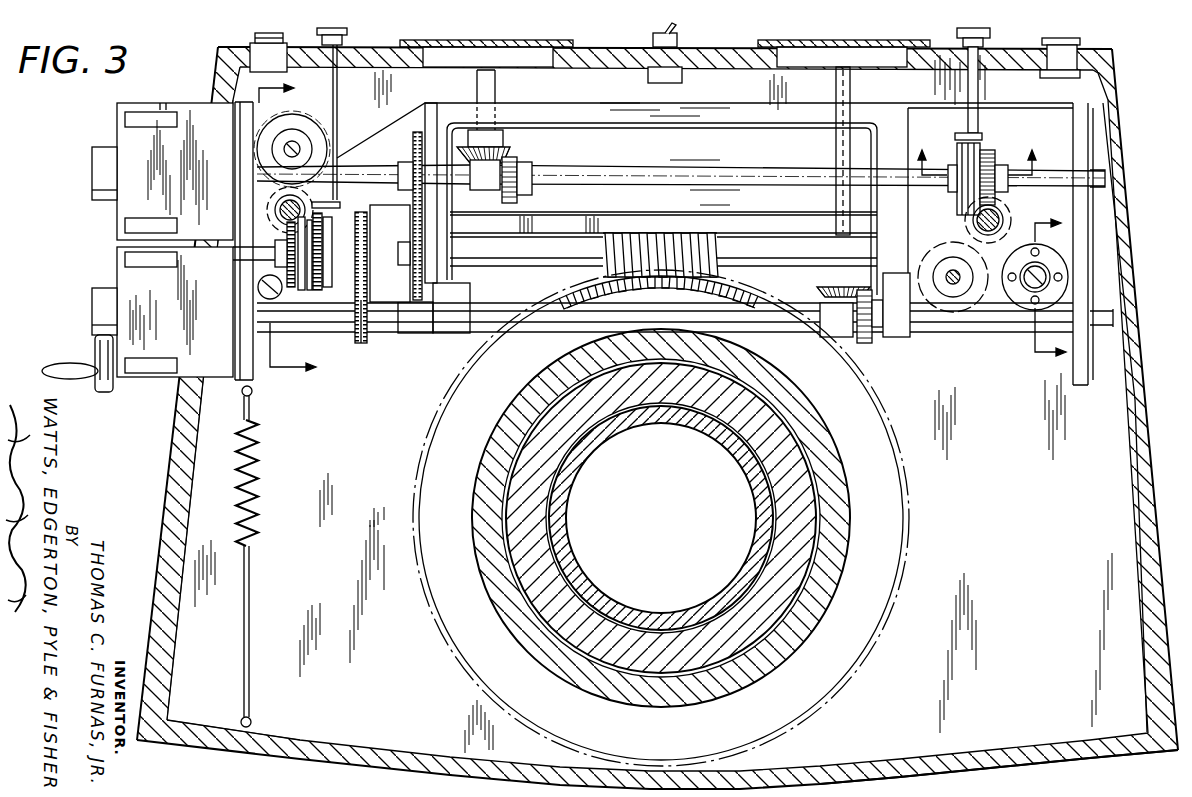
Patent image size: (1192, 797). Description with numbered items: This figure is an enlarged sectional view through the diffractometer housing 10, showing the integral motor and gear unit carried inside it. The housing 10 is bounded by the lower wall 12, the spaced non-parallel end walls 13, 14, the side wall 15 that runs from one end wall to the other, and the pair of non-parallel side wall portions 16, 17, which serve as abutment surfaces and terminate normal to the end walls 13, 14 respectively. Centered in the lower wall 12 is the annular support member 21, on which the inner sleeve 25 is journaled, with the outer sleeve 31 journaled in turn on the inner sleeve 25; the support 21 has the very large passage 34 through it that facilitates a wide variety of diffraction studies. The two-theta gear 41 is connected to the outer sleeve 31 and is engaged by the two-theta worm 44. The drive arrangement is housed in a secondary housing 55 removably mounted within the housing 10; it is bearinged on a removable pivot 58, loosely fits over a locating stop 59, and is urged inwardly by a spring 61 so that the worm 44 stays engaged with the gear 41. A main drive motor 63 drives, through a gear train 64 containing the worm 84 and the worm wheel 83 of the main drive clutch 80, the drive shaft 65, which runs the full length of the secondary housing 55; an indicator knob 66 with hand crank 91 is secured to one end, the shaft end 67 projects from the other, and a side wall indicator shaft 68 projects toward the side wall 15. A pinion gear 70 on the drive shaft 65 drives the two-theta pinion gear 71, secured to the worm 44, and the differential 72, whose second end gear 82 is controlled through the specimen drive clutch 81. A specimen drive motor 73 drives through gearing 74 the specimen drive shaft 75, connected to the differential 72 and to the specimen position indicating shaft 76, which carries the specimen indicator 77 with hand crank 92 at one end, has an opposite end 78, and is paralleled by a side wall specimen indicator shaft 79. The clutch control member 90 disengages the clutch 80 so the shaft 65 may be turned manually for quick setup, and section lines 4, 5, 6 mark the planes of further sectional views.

The section line 4- 4 is at (294, 228).
The section line 5- 5 is at (978, 151).
The section line 6- 6 is at (1051, 291).
The diffractometer housing 10 is at (651, 399).
The lower wall 12 is at (336, 450).
The end wall 13 is at (1148, 466).
The end wall 14 is at (165, 546).
The side wall 15 is at (614, 46).
The side wall portion 16 is at (985, 752).
The side wall portion 17 is at (352, 752).
The annular support member 21 is at (628, 428).
The inner sleeve 25 is at (750, 434).
The outer sleeve 31 is at (846, 499).
The passage 34 is at (661, 518).
The two-theta gear 41 is at (905, 506).
The two-theta worm 44 is at (728, 250).
The secondary housing 55 is at (943, 336).
The removable pivot 58 is at (1038, 256).
The locating stop 59 is at (259, 293).
The spring 61 is at (262, 480).
The main drive motor 63 is at (972, 298).
The main drive gear train 64 is at (965, 226).
The drive shaft 65 is at (750, 170).
The indicator knob 66 is at (124, 136).
The shaft end 67 is at (1108, 182).
The side wall indicator shaft 68 is at (494, 82).
The pinion gear 70 is at (412, 152).
The two-theta pinion gear 71 is at (450, 288).
The differential 72 is at (405, 334).
The specimen drive motor 73 is at (312, 137).
The specimen drive gearing 74 is at (280, 209).
The specimen drive shaft 75 is at (258, 253).
The specimen position indicating shaft 76 is at (374, 325).
The specimen indicator 77 is at (124, 280).
The opposite end of specimen shaft 78 is at (1107, 313).
The side wall specimen indicator shaft 79 is at (834, 82).
The main drive clutch 80 is at (983, 141).
The specimen drive clutch 81 is at (306, 295).
The second differential end gear 82 is at (370, 228).
The worm wheel 83 is at (1004, 192).
The worm 84 is at (968, 216).
The clutch control member 90 is at (987, 33).
The hand crank 91 is at (92, 186).
The hand crank 92 is at (93, 316).